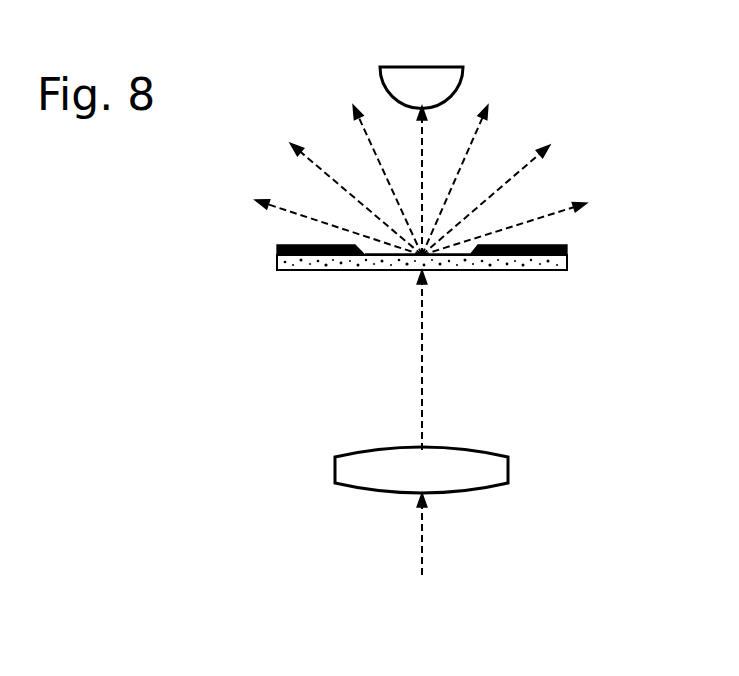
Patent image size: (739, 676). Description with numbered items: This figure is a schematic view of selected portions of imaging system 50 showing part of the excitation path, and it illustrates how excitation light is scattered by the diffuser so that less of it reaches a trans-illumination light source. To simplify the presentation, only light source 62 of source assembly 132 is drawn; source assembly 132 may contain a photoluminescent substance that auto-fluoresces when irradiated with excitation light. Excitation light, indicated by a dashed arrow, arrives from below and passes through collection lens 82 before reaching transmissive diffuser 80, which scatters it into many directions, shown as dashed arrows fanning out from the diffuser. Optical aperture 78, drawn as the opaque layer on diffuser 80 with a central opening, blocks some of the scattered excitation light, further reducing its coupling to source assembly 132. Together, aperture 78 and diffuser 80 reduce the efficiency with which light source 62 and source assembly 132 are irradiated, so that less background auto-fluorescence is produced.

The imaging system 50 is at (203, 216).
The green light source 62 is at (464, 73).
The optical aperture 78 is at (545, 246).
The transmissive diffuser 80 is at (557, 270).
The collection lens 82 is at (480, 449).
The source assembly 132 is at (405, 44).